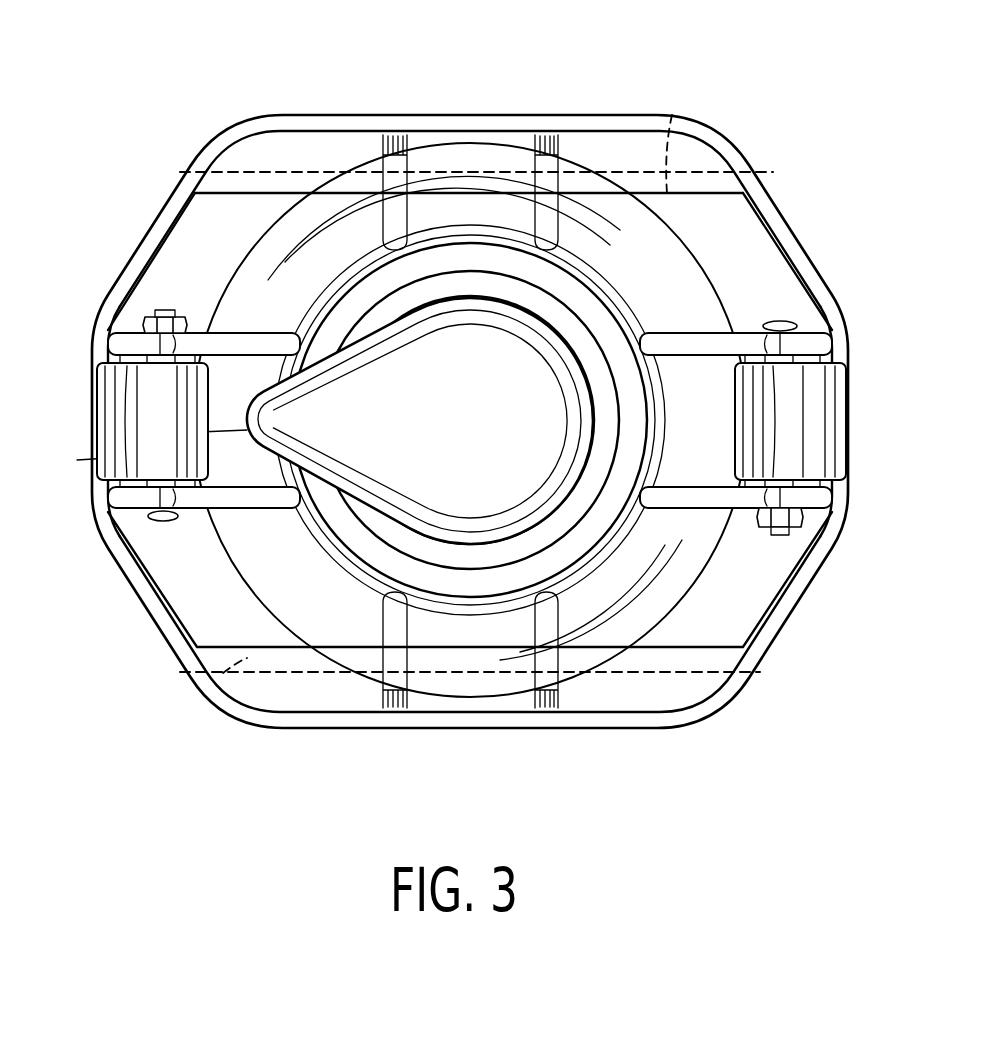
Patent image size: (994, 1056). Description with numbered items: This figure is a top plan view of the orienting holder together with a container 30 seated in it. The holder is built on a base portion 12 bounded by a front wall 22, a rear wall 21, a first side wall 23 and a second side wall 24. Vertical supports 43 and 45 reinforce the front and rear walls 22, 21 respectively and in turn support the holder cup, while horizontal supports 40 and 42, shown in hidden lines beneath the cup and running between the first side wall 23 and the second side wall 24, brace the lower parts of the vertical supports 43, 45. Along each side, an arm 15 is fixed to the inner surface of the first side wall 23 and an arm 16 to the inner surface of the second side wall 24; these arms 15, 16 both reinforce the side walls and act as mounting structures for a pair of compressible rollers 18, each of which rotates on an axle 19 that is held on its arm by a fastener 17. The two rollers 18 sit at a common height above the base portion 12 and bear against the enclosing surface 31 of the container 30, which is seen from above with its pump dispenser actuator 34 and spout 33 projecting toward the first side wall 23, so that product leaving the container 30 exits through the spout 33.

The base portion 12 is at (204, 136).
The arm 15 is at (110, 343).
The arm 16 is at (835, 343).
The fastener 17 is at (165, 325).
The roller 18 is at (122, 427).
The axle 19 is at (778, 320).
The rear wall 21 is at (597, 113).
The front wall 22 is at (628, 728).
The first side wall 23 is at (104, 292).
The second side wall 24 is at (832, 576).
The container 30 is at (669, 298).
The enclosing surface 31 is at (690, 238).
The spout 33 is at (146, 452).
The actuator 34 is at (487, 431).
The horizontal support 40 is at (223, 673).
The horizontal support 42 is at (672, 115).
The vertical support 43 is at (388, 133).
The vertical support 45 is at (547, 133).